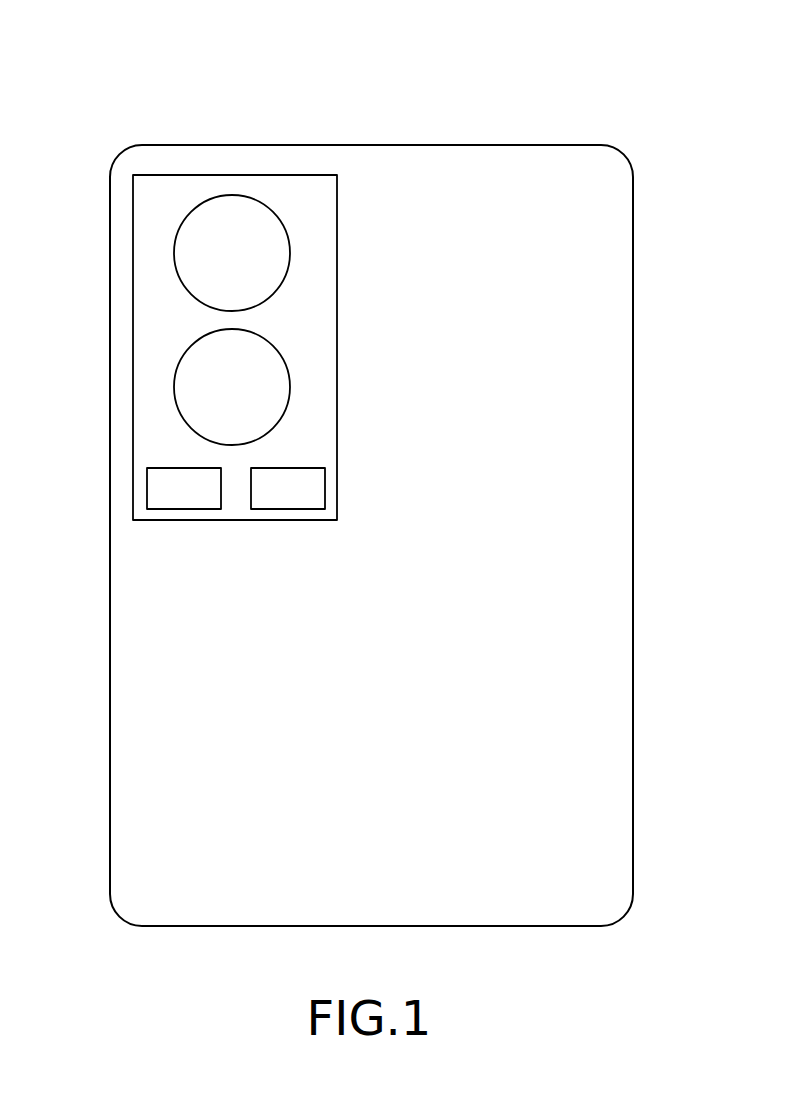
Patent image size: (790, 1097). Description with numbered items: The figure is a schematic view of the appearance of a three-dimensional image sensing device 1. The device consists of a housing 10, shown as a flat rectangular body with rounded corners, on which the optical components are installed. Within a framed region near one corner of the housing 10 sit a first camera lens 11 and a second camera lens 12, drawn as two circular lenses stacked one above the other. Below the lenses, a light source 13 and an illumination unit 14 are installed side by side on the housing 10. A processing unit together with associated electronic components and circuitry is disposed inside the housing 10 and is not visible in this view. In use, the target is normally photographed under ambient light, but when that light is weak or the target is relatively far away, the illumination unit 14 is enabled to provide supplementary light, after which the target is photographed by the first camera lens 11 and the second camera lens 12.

The 3D image sensing device 1 is at (254, 55).
The housing 10 is at (615, 310).
The first camera lens 11 is at (221, 220).
The second camera lens 12 is at (206, 385).
The light source 13 is at (163, 488).
The illumination unit 14 is at (308, 488).